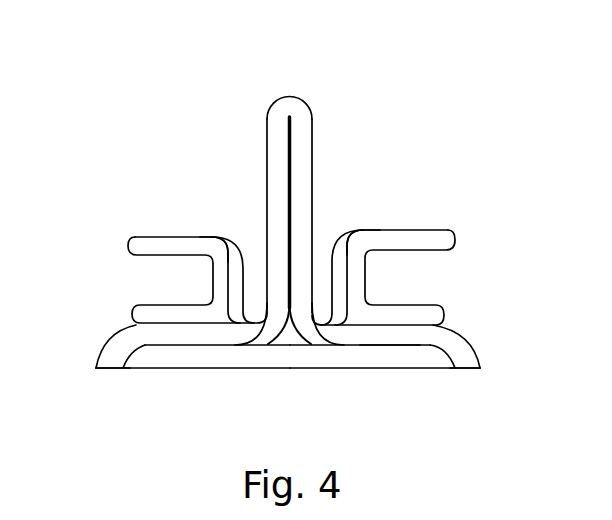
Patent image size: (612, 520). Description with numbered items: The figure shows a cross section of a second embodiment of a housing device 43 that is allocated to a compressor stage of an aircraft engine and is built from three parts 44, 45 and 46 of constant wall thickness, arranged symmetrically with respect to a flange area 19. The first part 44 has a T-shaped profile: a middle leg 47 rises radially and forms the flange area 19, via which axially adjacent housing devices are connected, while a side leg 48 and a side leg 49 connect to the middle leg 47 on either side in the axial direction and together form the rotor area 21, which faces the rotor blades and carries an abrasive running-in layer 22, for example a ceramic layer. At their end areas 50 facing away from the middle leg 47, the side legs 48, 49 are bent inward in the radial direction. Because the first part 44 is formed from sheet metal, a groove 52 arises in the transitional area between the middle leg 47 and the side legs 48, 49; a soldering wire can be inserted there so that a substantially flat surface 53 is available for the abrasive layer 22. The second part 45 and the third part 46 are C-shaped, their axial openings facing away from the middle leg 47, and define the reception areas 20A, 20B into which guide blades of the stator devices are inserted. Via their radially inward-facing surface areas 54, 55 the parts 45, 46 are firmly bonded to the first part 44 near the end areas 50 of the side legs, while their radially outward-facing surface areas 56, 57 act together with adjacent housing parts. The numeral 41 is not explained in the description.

The housing device 43 is at (141, 86).
The central joint line of stem 41 is at (291, 102).
The flange area 19 is at (305, 142).
The first part 44 is at (322, 161).
The middle leg 47 is at (278, 152).
The second part 45 is at (197, 234).
The third part 46 is at (422, 242).
The surface area 56 is at (172, 236).
The surface area 57 is at (423, 229).
The reception area 20A is at (205, 238).
The reception area 20B is at (378, 238).
The side leg 48 is at (212, 331).
The side leg 49 is at (349, 338).
The rotor area 21 is at (232, 336).
The abrasive running-in layer 22 is at (343, 353).
The groove 52 is at (290, 335).
The surface 53 is at (386, 351).
The surface area 54 is at (166, 330).
The surface area 55 is at (423, 333).
The end area 50 is at (100, 365).